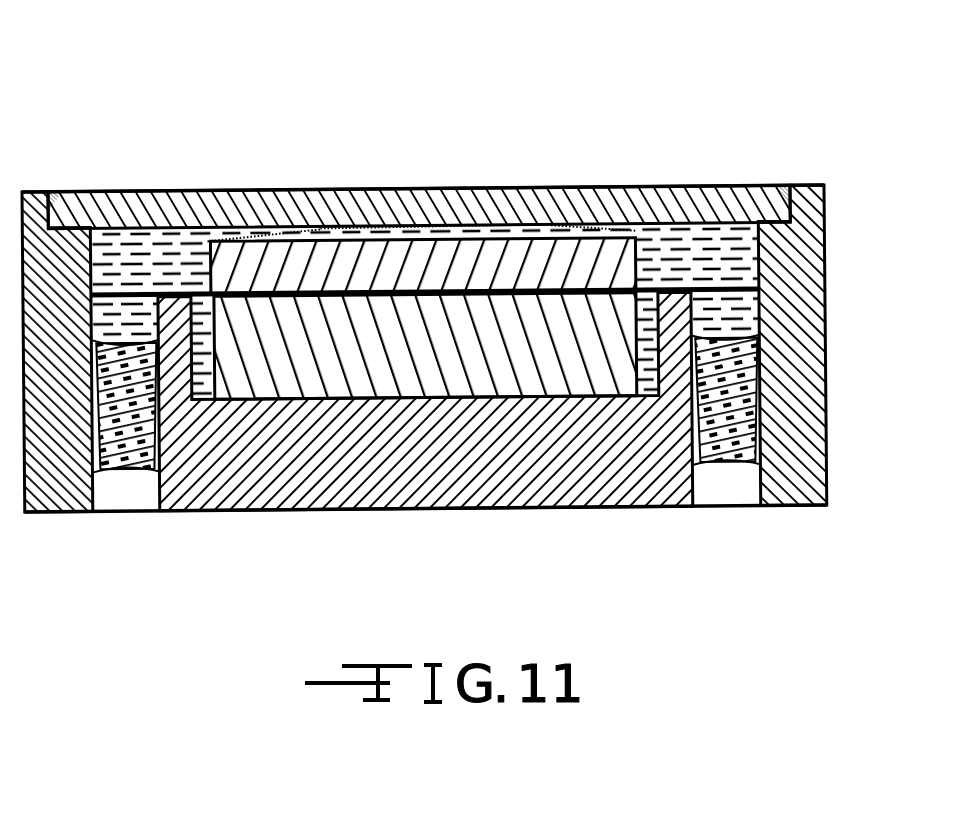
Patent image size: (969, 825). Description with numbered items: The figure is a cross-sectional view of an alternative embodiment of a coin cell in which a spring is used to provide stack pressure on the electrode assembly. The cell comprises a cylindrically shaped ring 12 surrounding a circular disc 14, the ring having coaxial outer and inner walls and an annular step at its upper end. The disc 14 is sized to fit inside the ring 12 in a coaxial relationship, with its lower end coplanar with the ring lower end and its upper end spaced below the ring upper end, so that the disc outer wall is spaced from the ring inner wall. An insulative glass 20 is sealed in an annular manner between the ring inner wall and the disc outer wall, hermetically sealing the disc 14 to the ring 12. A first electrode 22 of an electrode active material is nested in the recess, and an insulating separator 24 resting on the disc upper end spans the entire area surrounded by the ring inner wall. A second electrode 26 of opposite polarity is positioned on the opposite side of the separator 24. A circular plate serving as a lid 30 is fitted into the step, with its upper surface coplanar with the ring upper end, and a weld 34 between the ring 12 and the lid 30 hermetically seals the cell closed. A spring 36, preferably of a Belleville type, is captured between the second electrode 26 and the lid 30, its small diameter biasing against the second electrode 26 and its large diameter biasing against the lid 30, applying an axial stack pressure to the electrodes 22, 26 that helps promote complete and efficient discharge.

The ring 12 is at (828, 366).
The disc 14 is at (551, 509).
The insulative glass 20 is at (730, 463).
The first electrode 22 is at (336, 330).
The insulating separator 24 is at (643, 289).
The second electrode 26 is at (476, 263).
The lid 30 is at (158, 192).
The weld 34 is at (790, 185).
The spring 36 is at (230, 232).